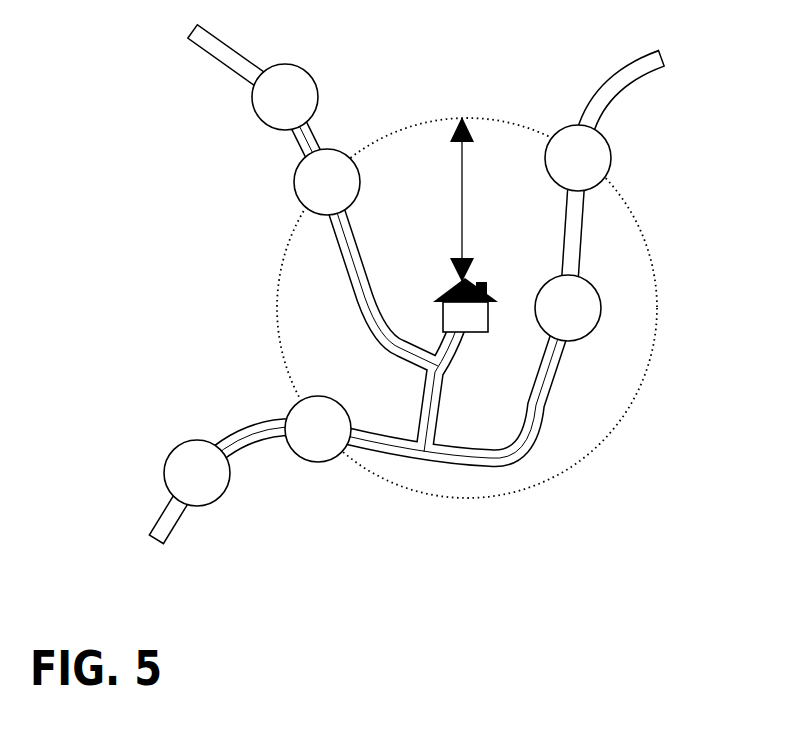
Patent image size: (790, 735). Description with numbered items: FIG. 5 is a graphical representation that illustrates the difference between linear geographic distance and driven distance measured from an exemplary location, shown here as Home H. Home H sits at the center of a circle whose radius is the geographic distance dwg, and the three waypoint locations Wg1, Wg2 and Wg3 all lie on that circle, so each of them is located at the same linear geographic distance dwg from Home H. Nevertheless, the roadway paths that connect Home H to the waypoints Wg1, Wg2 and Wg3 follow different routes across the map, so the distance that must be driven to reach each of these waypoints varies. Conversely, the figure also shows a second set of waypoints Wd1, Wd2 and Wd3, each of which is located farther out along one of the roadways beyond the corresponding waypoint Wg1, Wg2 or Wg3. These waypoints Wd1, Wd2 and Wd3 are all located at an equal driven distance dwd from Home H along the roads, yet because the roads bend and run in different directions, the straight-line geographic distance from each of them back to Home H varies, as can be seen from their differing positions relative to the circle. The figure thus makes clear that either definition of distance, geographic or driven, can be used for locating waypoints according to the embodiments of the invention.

The driven-distance waypoint location Wd3 is at (285, 97).
The geographic-distance waypoint location Wg3 is at (327, 182).
The geographic-distance waypoint location Wg1 is at (578, 158).
The driven-distance waypoint location Wd1 is at (568, 308).
The geographic-distance waypoint location Wg2 is at (318, 429).
The driven-distance waypoint location Wd2 is at (197, 473).
The Home H is at (465, 305).
The geographic distance dwg is at (482, 199).
The driven distance dwd is at (573, 383).